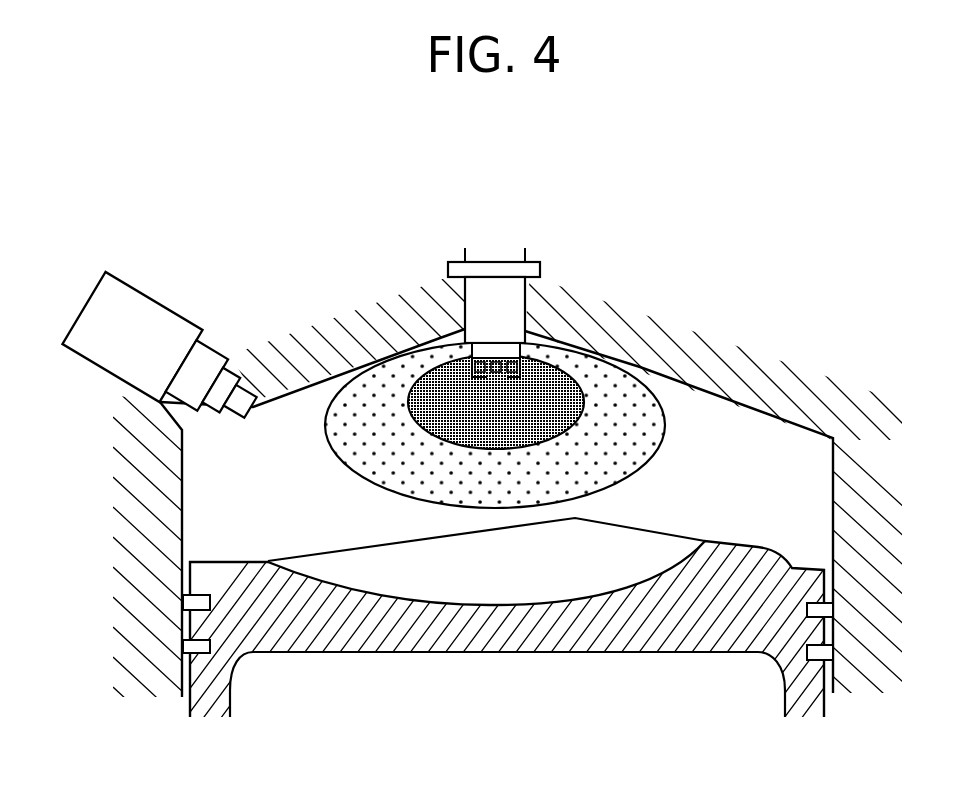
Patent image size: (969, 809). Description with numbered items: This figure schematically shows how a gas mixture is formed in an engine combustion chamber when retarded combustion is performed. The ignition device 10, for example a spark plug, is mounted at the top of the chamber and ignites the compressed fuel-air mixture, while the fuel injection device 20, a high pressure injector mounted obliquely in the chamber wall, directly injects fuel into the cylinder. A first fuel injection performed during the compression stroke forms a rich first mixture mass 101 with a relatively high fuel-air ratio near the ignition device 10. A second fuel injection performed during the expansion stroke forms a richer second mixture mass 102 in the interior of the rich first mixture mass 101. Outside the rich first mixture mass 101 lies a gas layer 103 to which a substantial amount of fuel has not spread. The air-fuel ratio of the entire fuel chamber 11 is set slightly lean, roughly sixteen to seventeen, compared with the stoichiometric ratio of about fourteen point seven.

The ignition device 10 is at (507, 310).
The fuel chamber 11 is at (222, 497).
The fuel injection device 20 is at (135, 318).
The rich first mixture mass 101 is at (593, 440).
The richer second mixture mass 102 is at (553, 393).
The gas layer 103 is at (718, 437).